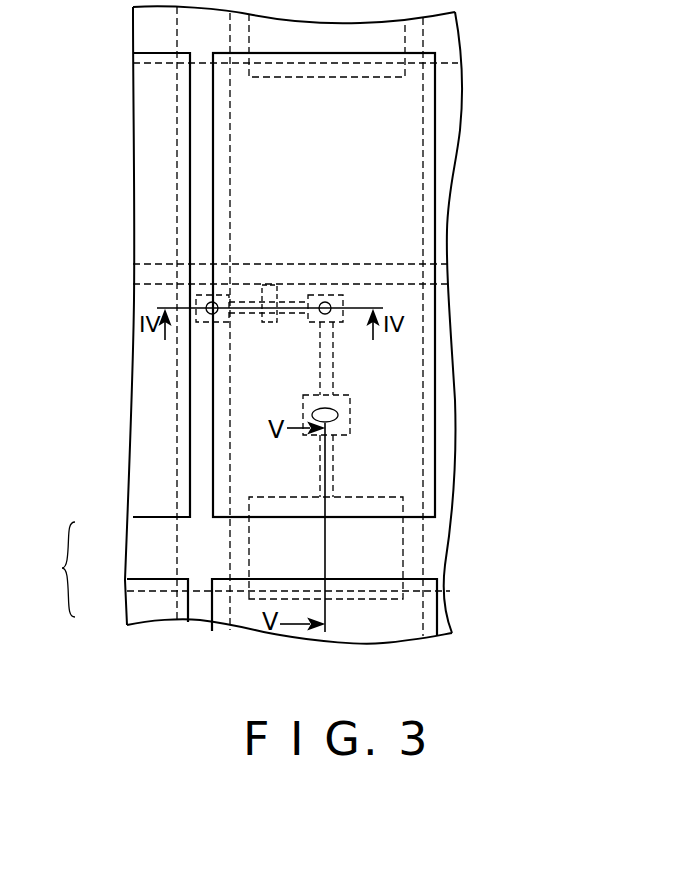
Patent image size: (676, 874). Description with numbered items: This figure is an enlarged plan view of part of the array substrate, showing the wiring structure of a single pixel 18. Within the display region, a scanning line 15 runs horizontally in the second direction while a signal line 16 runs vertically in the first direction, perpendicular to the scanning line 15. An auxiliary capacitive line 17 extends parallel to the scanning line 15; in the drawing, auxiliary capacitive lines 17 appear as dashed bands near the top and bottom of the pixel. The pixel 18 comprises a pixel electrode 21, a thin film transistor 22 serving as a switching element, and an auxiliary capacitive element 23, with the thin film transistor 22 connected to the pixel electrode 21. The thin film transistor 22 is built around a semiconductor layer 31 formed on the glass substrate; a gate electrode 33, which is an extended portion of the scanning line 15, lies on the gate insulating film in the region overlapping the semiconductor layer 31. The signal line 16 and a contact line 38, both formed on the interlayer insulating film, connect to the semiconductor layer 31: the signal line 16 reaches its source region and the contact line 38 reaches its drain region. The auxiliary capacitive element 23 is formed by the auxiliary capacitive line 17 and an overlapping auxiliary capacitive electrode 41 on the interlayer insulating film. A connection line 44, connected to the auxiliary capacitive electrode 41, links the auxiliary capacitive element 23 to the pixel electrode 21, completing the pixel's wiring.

The scanning line 15 is at (155, 264).
The signal line 16 is at (177, 137).
The auxiliary capacitive line 17 is at (150, 63).
The pixel 18 is at (463, 232).
The pixel electrode 21 is at (191, 183).
The thin film transistor 22 is at (305, 261).
The auxiliary capacitive element 23 is at (52, 569).
The semiconductor layer 31 is at (272, 292).
The gate electrode 33 is at (265, 323).
The contact line 38 is at (333, 375).
The auxiliary capacitive electrode 41 is at (295, 78).
The connection line 44 is at (333, 452).